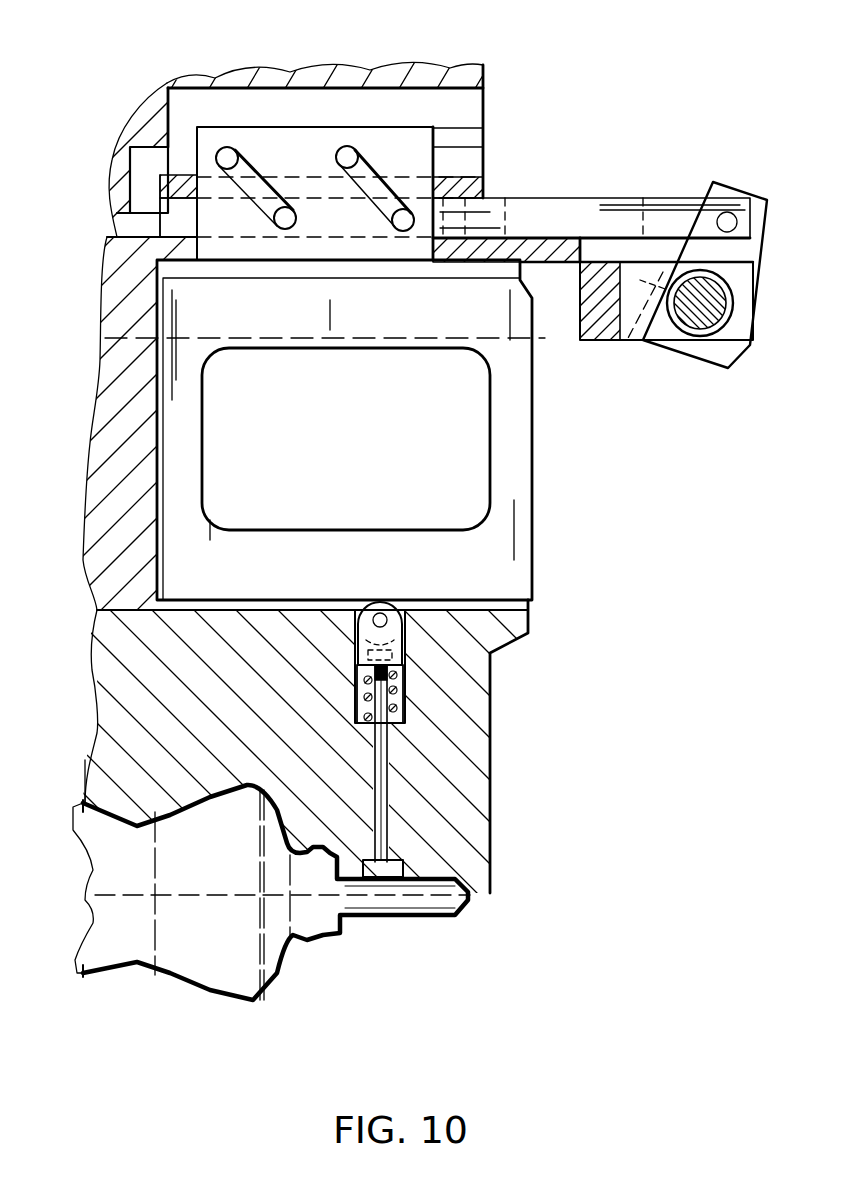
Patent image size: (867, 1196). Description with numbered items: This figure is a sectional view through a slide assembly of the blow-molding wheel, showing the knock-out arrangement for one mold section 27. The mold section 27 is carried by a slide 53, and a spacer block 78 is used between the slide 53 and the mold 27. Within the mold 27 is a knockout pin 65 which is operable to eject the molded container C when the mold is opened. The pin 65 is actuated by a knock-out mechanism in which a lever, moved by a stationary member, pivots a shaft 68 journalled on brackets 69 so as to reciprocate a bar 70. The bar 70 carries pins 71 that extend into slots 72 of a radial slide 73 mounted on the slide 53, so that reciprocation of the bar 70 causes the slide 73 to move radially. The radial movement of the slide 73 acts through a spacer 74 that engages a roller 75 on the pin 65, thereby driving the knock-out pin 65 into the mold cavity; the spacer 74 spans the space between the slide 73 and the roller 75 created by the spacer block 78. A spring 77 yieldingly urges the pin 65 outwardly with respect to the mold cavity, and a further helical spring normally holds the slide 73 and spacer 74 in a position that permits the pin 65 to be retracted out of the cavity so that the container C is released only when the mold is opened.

The slide 53 is at (478, 74).
The radial slide 73 is at (318, 150).
The slots 72 is at (337, 160).
The pins 71 is at (397, 222).
The bar 70 is at (572, 212).
The brackets 69 is at (628, 340).
The shaft 68 is at (693, 318).
The spacer block 78 is at (110, 445).
The spacer 74 is at (520, 445).
The roller 75 is at (375, 598).
The mold section 27 is at (115, 710).
The spring 77 is at (395, 672).
The knockout pin 65 is at (383, 762).
The molded container C is at (290, 968).